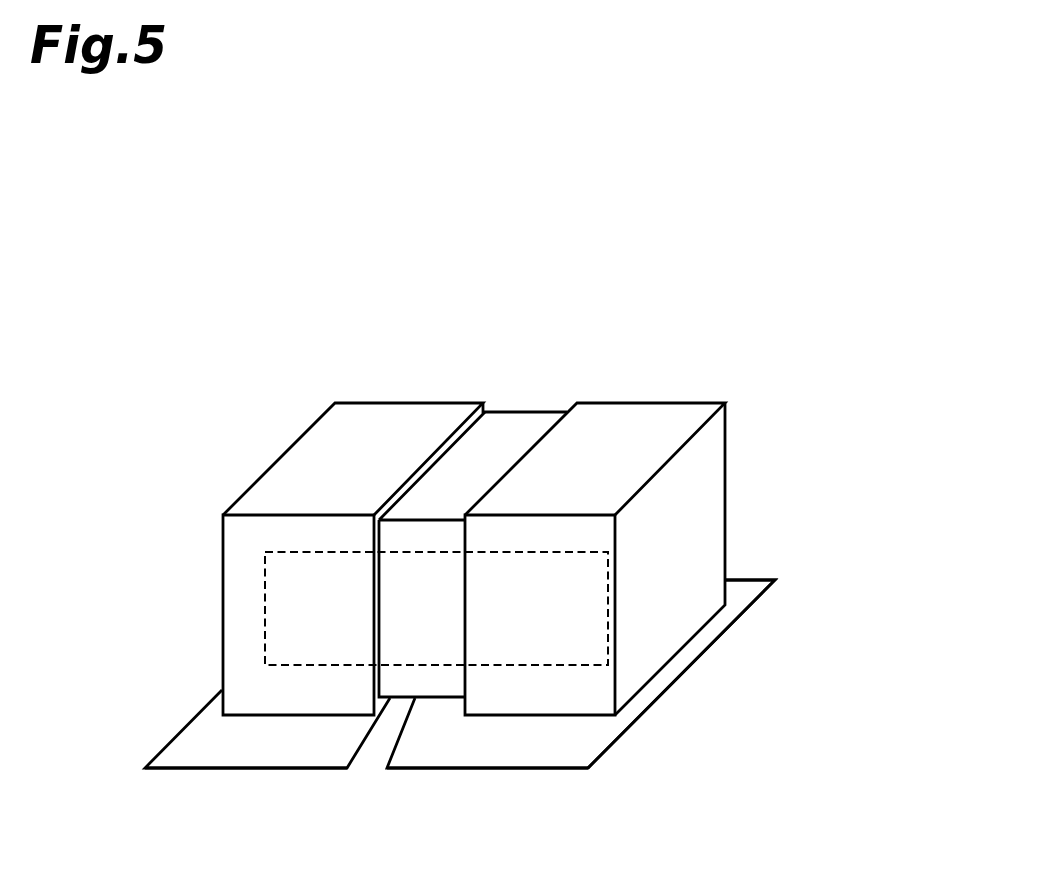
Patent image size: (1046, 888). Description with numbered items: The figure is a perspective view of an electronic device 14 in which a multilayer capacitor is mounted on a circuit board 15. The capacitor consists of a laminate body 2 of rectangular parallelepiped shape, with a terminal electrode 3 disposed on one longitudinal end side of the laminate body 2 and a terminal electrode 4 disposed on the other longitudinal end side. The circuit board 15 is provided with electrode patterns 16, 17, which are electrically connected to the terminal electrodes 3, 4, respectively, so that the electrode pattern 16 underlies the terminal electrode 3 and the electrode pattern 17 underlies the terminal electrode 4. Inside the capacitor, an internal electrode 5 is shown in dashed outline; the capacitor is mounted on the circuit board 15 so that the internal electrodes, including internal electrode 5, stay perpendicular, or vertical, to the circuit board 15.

The electronic device 14 is at (688, 277).
The terminal electrode 4 is at (390, 418).
The laminate body 2 is at (509, 430).
The terminal electrode 3 is at (632, 418).
The internal electrode 5 is at (302, 613).
The circuit board 15 is at (760, 577).
The electrode pattern 17 is at (263, 752).
The electrode pattern 16 is at (500, 752).